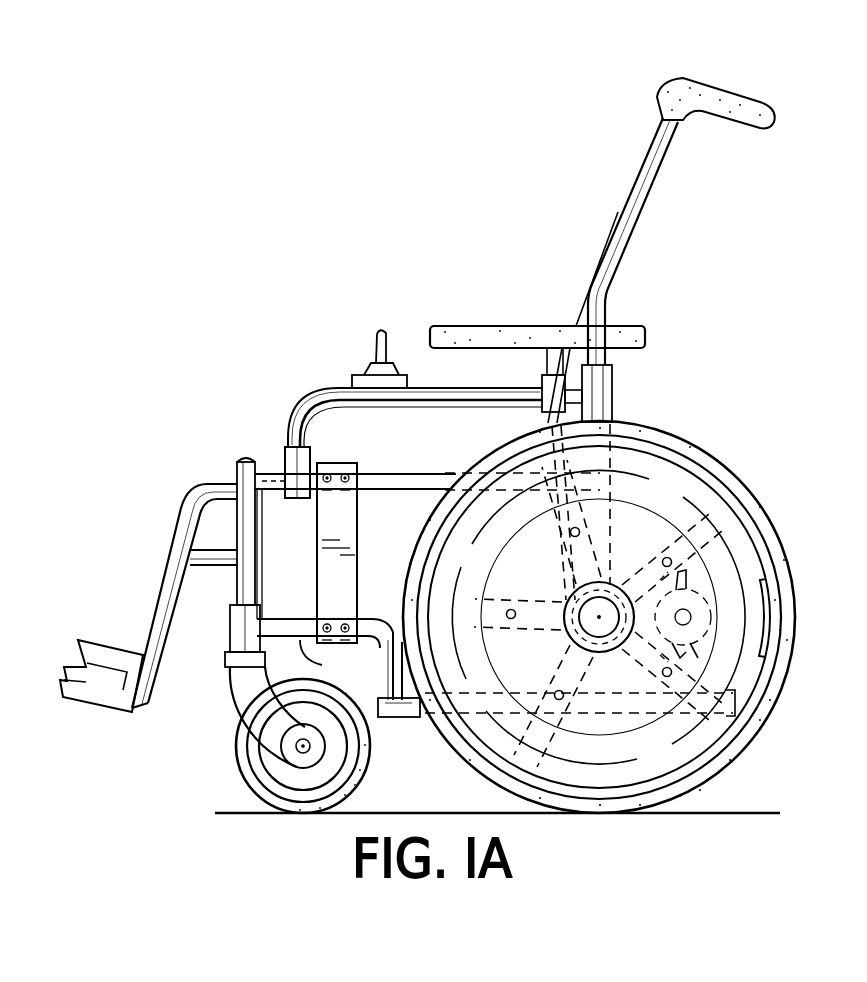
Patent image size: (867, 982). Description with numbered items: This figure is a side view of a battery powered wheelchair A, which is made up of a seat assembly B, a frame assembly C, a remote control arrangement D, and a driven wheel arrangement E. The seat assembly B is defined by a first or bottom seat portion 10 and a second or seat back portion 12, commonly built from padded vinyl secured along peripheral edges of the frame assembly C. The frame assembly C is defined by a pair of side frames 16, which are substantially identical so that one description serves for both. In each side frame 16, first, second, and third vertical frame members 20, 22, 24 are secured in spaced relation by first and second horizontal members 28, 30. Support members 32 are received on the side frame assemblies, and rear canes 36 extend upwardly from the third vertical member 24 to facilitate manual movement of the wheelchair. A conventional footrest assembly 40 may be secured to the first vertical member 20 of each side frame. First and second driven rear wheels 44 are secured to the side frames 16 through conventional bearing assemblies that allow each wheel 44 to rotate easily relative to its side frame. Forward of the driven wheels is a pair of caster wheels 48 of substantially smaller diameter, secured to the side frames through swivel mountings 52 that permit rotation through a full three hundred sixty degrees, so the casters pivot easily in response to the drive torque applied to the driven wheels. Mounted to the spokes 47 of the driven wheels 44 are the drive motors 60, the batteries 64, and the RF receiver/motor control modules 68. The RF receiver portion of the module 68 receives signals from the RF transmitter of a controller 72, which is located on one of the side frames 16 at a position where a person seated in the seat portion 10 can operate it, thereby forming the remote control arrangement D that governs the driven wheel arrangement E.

The bottom seat portion 10 is at (355, 560).
The seat back portion 12 is at (594, 250).
The side frame 16 is at (230, 577).
The first vertical frame member 20 is at (247, 590).
The second vertical frame member 22 is at (372, 478).
The third vertical frame member 24 is at (610, 390).
The first horizontal member 28 is at (270, 470).
The second horizontal member 30 is at (322, 650).
The support member 32 is at (322, 381).
The rear cane 36 is at (643, 204).
The footrest assembly 40 is at (170, 560).
The driven rear wheel 44 is at (714, 456).
The spokes 47 is at (790, 652).
The caster wheel 48 is at (237, 745).
The swivel mounting 52 is at (230, 618).
The drive motor 60 is at (790, 580).
The batteries 64 is at (492, 572).
The RF receiver/motor control module 68 is at (640, 528).
The controller 72 is at (378, 340).
The powered wheelchair A is at (353, 305).
The seat assembly B is at (543, 317).
The frame assembly C is at (245, 543).
The remote control arrangement D is at (627, 503).
The driven wheel arrangement E is at (634, 611).